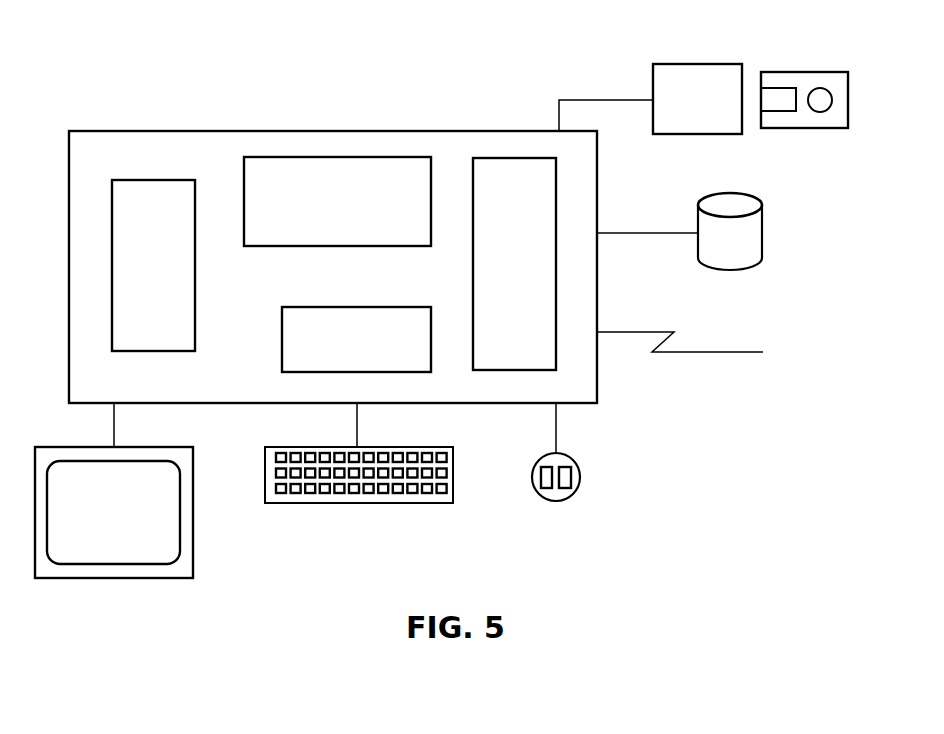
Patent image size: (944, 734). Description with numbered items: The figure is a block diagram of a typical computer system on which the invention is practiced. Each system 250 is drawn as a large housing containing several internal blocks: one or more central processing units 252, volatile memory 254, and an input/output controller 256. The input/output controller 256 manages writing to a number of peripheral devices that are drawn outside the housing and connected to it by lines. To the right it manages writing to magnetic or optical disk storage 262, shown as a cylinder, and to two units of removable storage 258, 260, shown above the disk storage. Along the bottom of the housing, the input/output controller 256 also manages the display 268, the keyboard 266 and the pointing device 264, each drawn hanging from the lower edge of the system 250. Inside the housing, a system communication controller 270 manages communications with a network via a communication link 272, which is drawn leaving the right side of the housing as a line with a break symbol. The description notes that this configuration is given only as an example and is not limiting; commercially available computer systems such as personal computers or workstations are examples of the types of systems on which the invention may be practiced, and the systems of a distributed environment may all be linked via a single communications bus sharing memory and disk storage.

The system 250 is at (166, 120).
The central processing units 252 is at (170, 252).
The volatile memory 254 is at (407, 231).
The input/output controller 256 is at (531, 230).
The removable storage 258 is at (712, 111).
The removable storage 260 is at (799, 72).
The magnetic or optical disk storage 262 is at (747, 255).
The pointing device 264 is at (556, 501).
The keyboard 266 is at (357, 503).
The display 268 is at (153, 547).
The system communication controller 270 is at (407, 357).
The communication link 272 is at (718, 352).